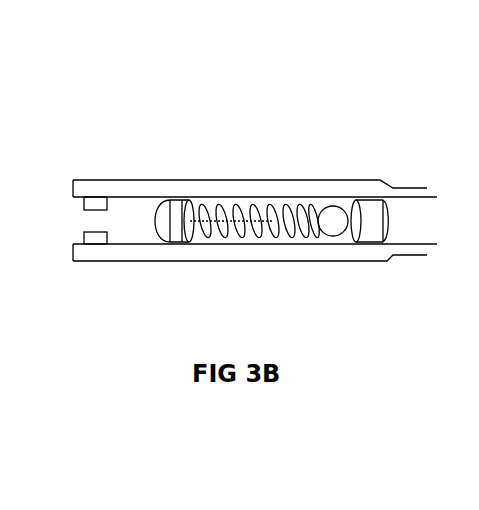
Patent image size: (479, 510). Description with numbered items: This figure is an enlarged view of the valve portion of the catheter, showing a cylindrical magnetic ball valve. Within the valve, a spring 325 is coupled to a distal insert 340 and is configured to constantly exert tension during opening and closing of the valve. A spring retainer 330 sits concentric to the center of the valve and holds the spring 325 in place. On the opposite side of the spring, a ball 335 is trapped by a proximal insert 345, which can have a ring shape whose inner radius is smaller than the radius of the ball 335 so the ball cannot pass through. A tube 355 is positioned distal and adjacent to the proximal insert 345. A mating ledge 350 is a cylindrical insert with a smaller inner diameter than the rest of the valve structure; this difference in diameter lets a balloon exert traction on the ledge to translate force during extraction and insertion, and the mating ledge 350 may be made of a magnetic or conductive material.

The spring 325 is at (292, 197).
The spring retainer 330 is at (182, 223).
The ball 335 is at (326, 205).
The distal insert 340 is at (162, 210).
The proximal insert 345 is at (363, 221).
The mating ledge 350 is at (96, 244).
The tube 355 is at (308, 261).